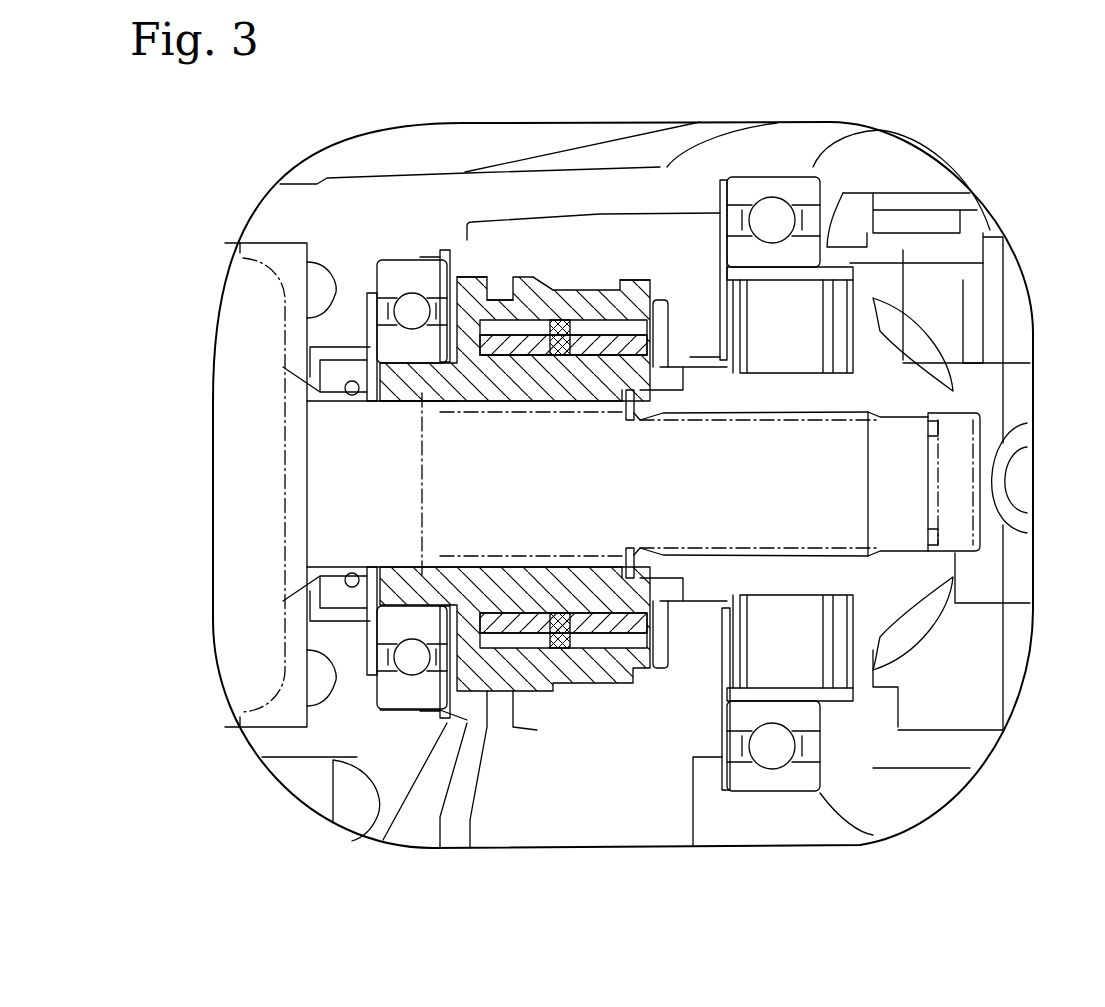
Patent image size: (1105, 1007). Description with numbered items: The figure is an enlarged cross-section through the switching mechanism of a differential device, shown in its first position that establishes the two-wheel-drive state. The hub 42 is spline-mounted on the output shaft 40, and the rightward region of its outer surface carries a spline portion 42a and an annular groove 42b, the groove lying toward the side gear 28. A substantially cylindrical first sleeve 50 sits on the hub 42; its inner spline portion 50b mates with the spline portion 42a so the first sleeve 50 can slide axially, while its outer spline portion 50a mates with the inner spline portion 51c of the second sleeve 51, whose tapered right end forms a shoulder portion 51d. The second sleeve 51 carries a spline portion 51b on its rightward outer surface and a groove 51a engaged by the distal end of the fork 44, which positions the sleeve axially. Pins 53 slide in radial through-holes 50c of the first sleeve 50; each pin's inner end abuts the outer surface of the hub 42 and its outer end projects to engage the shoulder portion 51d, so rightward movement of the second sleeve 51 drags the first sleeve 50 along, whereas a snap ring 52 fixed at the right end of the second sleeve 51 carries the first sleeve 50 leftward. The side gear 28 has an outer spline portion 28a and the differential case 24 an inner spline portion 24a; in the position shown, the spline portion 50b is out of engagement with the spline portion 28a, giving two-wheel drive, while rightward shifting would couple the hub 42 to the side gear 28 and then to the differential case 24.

The differential case 24 is at (903, 250).
The spline portion of the differential case 24a is at (813, 287).
The side gear 28 is at (903, 360).
The outer spline portion of the side gear 28a is at (725, 372).
The output shaft 40 is at (327, 460).
The hub 42 is at (455, 378).
The spline portion of the hub 42a is at (563, 352).
The annular groove 42b is at (640, 400).
The fork 44 is at (487, 780).
The first sleeve 50 is at (470, 282).
The outer spline portion of the first sleeve 50a is at (508, 298).
The inner spline portion of the first sleeve 50b is at (483, 362).
The through-holes 50c is at (517, 305).
The second sleeve 51 is at (570, 285).
The groove 51a is at (520, 690).
The spline portion of the second sleeve 51b is at (606, 287).
The spline portion of the second sleeve 51c is at (460, 358).
The shoulder portion 51d is at (563, 305).
The snap ring 52 is at (655, 290).
The pin 53 is at (560, 612).